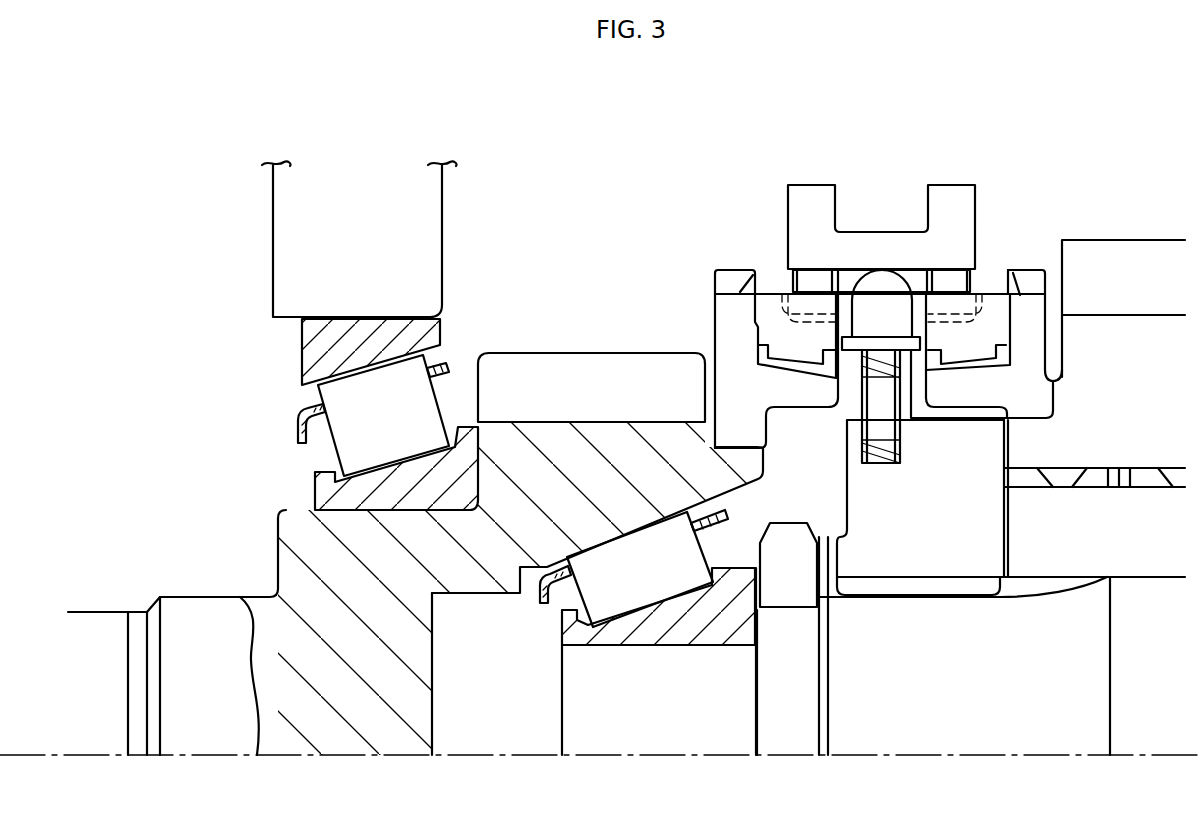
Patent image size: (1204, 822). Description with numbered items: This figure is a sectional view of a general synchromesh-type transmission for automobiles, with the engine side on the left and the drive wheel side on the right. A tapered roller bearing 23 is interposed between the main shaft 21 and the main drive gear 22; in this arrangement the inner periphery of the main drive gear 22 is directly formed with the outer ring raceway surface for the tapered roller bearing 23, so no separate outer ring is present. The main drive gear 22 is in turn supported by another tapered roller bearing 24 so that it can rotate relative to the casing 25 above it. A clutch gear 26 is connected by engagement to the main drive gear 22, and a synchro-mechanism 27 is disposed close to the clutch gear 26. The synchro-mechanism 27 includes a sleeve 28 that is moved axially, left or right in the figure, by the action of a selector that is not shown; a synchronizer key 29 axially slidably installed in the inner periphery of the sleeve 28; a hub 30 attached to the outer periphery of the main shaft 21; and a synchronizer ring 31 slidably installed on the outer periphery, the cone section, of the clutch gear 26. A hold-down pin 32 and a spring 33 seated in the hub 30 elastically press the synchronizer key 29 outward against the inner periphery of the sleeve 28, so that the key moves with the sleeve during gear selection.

The main shaft 21 is at (1093, 672).
The main drive gear 22 is at (552, 433).
The tapered roller bearing 23 is at (527, 620).
The tapered roller bearing 24 is at (289, 449).
The casing 25 is at (443, 222).
The clutch gear 26 is at (715, 307).
The synchro-mechanism 27 is at (938, 303).
The sleeve 28 is at (950, 200).
The synchronizer key 29 is at (955, 303).
The hub 30 is at (1007, 527).
The synchronizer ring 31 is at (775, 300).
The hold-down pin 32 is at (887, 318).
The spring 33 is at (878, 364).